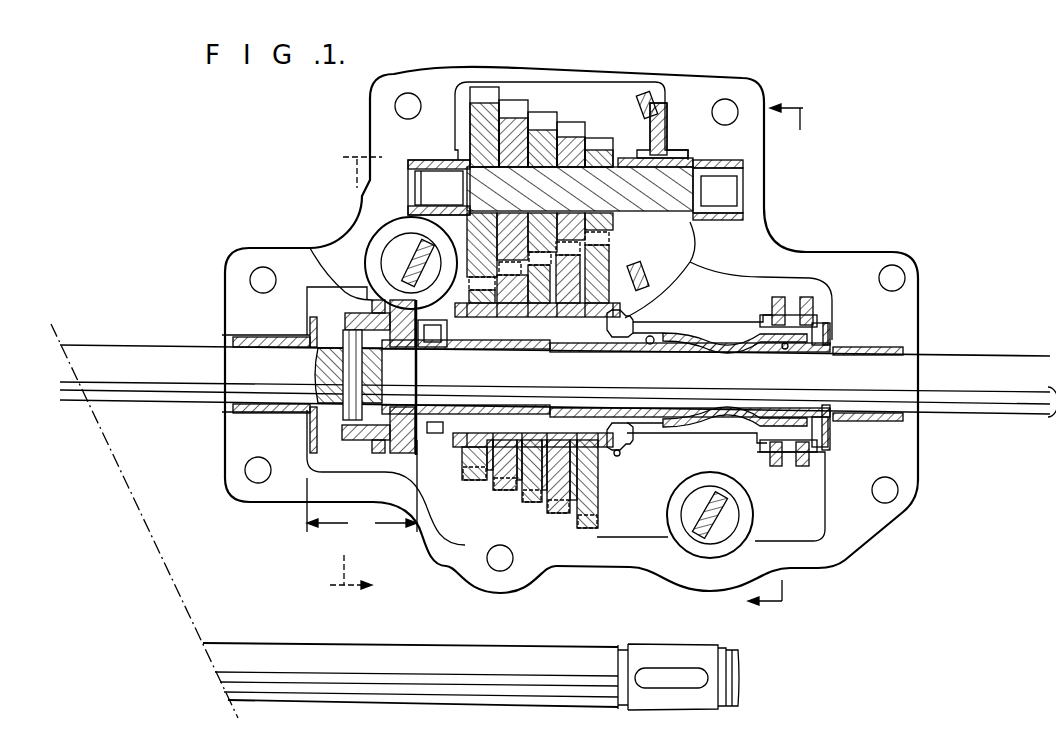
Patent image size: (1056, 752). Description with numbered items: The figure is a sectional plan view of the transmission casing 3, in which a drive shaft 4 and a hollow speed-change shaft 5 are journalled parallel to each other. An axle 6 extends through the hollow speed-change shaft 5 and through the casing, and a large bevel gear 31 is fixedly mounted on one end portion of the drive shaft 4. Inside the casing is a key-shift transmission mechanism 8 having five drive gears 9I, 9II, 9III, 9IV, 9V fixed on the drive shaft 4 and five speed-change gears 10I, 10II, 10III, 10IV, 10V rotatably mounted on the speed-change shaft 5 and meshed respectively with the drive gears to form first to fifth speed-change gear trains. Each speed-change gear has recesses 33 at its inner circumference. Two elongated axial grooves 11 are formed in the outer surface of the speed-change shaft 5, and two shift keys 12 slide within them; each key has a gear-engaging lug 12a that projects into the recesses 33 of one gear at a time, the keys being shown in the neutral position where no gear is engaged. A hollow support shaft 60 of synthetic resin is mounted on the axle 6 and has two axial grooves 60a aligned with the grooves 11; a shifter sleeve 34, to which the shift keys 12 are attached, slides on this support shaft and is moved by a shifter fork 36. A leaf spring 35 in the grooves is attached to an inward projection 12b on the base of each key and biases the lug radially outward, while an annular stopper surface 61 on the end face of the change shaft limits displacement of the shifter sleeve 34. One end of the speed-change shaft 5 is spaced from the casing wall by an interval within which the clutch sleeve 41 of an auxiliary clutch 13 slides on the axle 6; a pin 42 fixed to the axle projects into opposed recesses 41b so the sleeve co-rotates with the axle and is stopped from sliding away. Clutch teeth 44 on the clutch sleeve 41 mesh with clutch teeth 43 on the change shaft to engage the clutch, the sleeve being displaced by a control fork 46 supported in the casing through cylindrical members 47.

The transmission casing 3 is at (650, 556).
The drive shaft 4 is at (673, 190).
The speed-change shaft 5 is at (500, 407).
The axle 6 is at (848, 380).
The key-shift transmission mechanism 8 is at (700, 256).
The drive gear 9I is at (603, 145).
The drive gear 9II is at (571, 128).
The drive gear 9III is at (547, 117).
The drive gear 9IV is at (513, 108).
The drive gear 9V is at (483, 97).
The speed-change gear 10I is at (588, 530).
The speed-change gear 10II is at (556, 515).
The speed-change gear 10III is at (532, 495).
The speed-change gear 10IV is at (505, 492).
The speed-change gear 10V is at (467, 463).
The elongated axial groove 11 is at (540, 414).
The shift key 12 is at (710, 327).
The gear-engaging lug 12a is at (645, 300).
The inward projection 12b is at (812, 337).
The auxiliary clutch 13 is at (331, 290).
The large bevel gear 31 is at (655, 98).
The recesses 33 is at (483, 312).
The shifter sleeve 34 is at (807, 298).
The leaf spring 35 is at (744, 418).
The shifter fork 36 is at (713, 527).
The clutch sleeve 41 is at (368, 440).
The opposed recesses 41b is at (340, 420).
The pin 42 is at (350, 340).
The clutch teeth 43 is at (430, 428).
The clutch teeth 44 is at (440, 333).
The control fork 46 is at (411, 262).
The cylindrical members 47 is at (405, 243).
The hollow support shaft 60 is at (787, 349).
The elongated axial grooves 60a is at (652, 344).
The annular stopper surface 61 is at (620, 457).